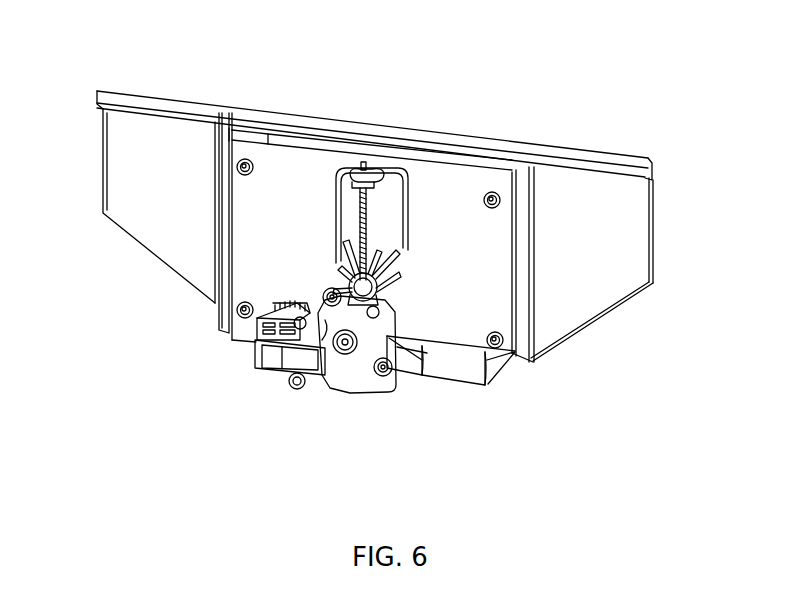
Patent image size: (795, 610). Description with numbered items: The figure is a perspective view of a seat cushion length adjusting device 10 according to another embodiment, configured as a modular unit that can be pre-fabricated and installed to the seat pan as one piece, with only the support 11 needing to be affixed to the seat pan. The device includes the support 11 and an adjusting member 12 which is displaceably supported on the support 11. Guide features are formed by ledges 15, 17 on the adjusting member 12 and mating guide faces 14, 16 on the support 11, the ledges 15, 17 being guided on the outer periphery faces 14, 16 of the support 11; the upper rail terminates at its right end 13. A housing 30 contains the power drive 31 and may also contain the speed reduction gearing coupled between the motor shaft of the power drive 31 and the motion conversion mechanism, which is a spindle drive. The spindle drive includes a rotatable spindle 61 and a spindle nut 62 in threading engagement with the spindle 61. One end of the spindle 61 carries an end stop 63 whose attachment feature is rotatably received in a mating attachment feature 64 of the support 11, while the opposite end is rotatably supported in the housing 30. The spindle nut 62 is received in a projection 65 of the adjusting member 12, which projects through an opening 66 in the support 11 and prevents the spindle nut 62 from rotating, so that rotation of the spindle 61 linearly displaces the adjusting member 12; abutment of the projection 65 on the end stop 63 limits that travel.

The seat cushion length adjusting device 10 is at (70, 50).
The support 11 is at (242, 292).
The adjusting member 12 is at (115, 227).
The rail end 13 is at (648, 163).
The guide face 14 is at (515, 354).
The ledge 15 is at (521, 168).
The guide face 16 is at (233, 143).
The ledge 17 is at (215, 298).
The housing 30 is at (257, 372).
The power drive 31 is at (292, 365).
The spindle 61 is at (357, 223).
The spindle nut 62 is at (381, 291).
The end stop 63 is at (358, 182).
The attachment feature 64 is at (373, 170).
The projection 65 is at (386, 268).
The opening 66 is at (410, 226).